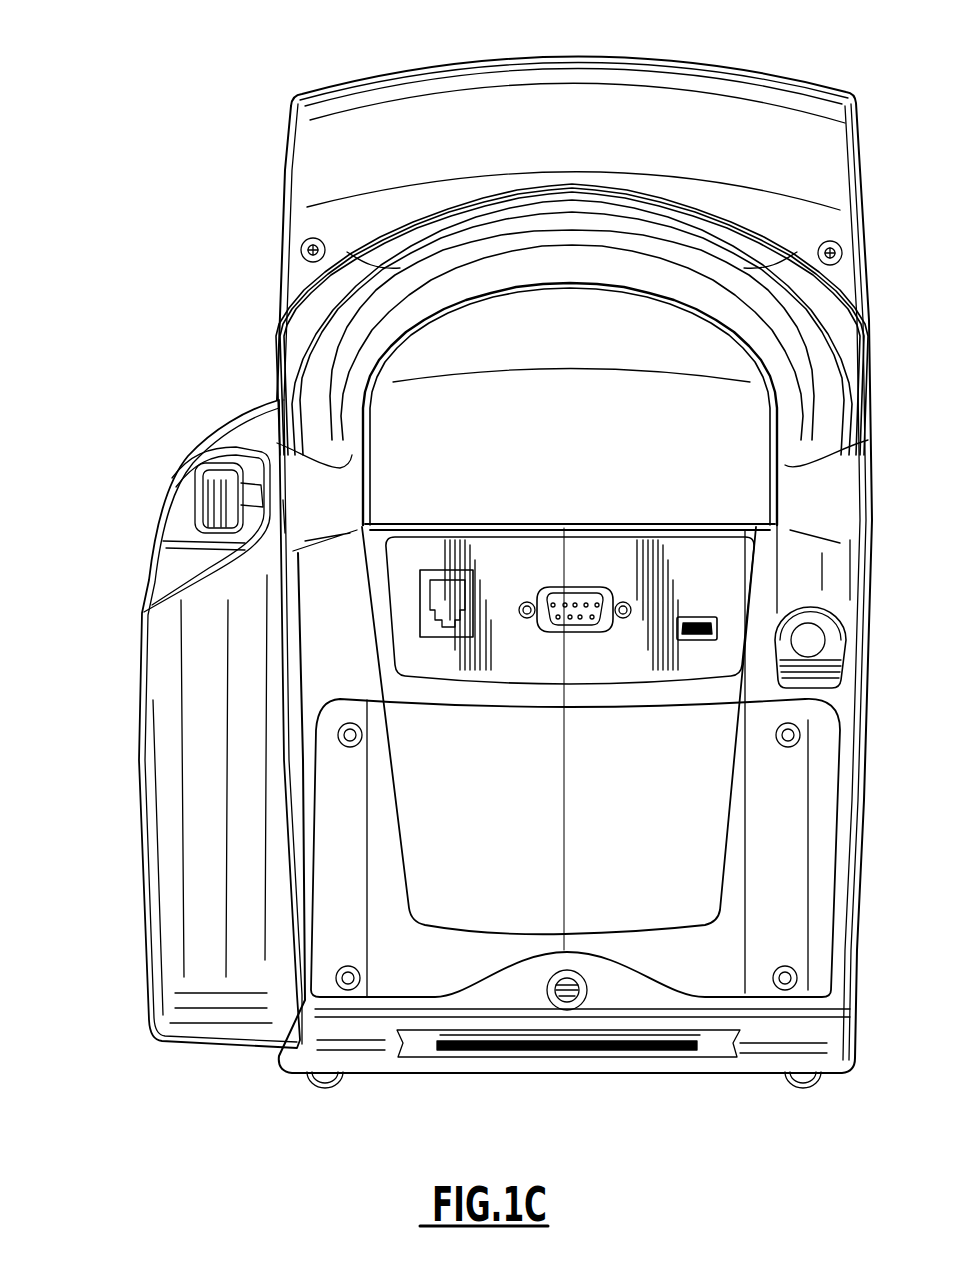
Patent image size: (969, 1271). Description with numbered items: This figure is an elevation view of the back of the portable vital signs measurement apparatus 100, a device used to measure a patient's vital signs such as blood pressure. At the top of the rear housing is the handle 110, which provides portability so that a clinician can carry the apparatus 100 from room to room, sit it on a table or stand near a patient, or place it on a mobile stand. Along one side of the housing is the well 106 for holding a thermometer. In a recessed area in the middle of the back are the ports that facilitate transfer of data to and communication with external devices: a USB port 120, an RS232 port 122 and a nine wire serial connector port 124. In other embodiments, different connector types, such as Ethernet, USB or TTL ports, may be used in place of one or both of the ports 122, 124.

The vital signs measurement apparatus 100 is at (745, 70).
The handle 110 is at (570, 186).
The well 106 is at (139, 698).
The 9 wire serial connector port 124 is at (420, 612).
The RS232 port 122 is at (594, 587).
The USB port 120 is at (698, 615).